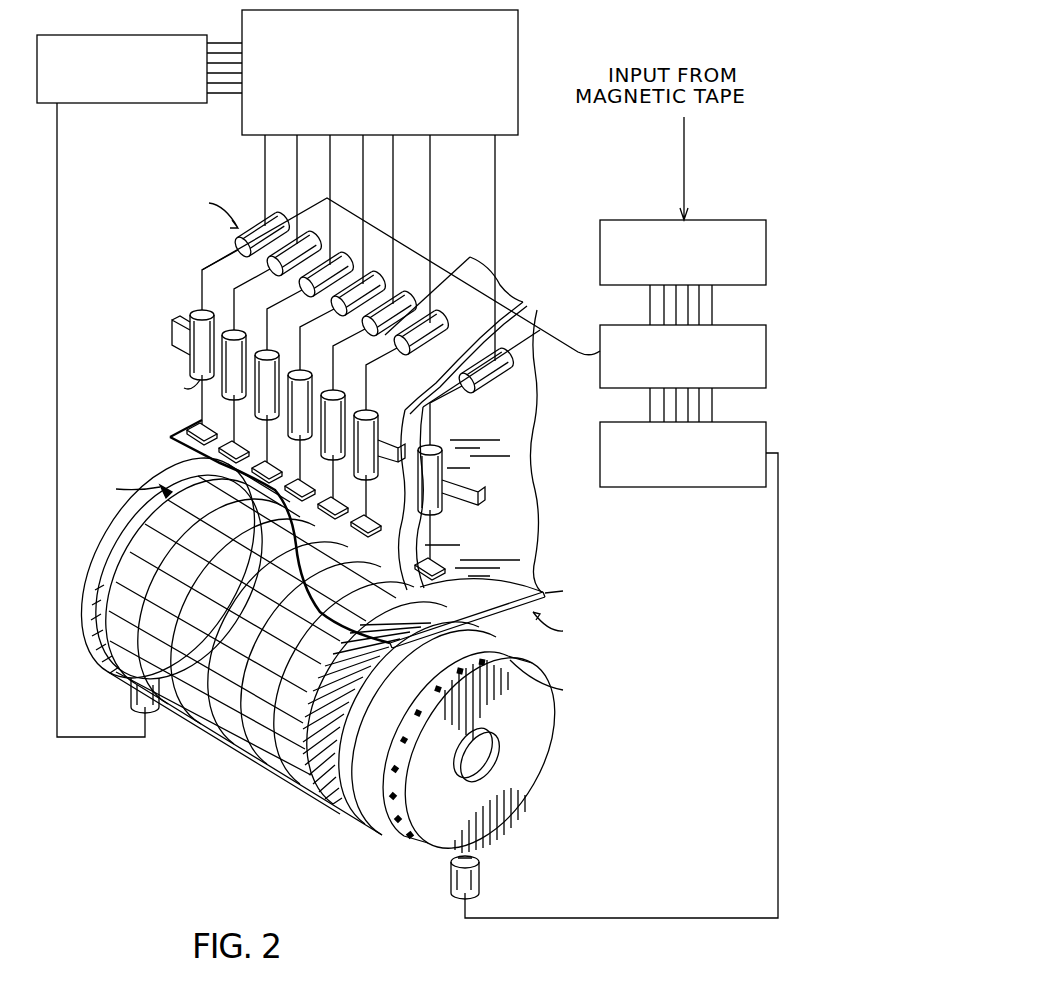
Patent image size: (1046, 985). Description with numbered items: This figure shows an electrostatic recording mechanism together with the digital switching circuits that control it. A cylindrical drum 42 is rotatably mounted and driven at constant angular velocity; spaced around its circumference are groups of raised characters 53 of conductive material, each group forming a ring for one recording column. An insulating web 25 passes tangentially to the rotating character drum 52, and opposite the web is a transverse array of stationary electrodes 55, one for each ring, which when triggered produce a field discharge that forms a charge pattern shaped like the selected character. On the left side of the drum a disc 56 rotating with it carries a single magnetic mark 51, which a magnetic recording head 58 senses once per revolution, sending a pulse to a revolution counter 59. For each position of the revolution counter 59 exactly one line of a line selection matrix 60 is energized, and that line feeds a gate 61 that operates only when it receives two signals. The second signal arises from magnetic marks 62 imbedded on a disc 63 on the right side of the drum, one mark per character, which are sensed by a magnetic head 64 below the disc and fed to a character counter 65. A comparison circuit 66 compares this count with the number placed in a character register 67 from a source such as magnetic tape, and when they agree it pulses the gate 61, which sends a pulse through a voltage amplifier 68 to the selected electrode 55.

The revolution counter 59 is at (163, 36).
The line selection matrix 60 is at (518, 42).
The gate 61 is at (239, 240).
The voltage amplifier 68 is at (197, 318).
The stationary electrodes 55 is at (197, 425).
The single magnetic mark 51 is at (158, 489).
The disc 56 is at (106, 666).
The magnetic recording head 58 is at (146, 708).
The cylindrical drum 42 is at (298, 782).
The raised characters 53 is at (345, 802).
The character drum 52 is at (397, 828).
The magnetic marks 62 is at (420, 850).
The disc 63 is at (525, 772).
The magnetic head 64 is at (480, 868).
The insulating web 25 is at (536, 546).
The character counter 65 is at (605, 487).
The comparison circuit 66 is at (603, 376).
The character register 67 is at (604, 250).